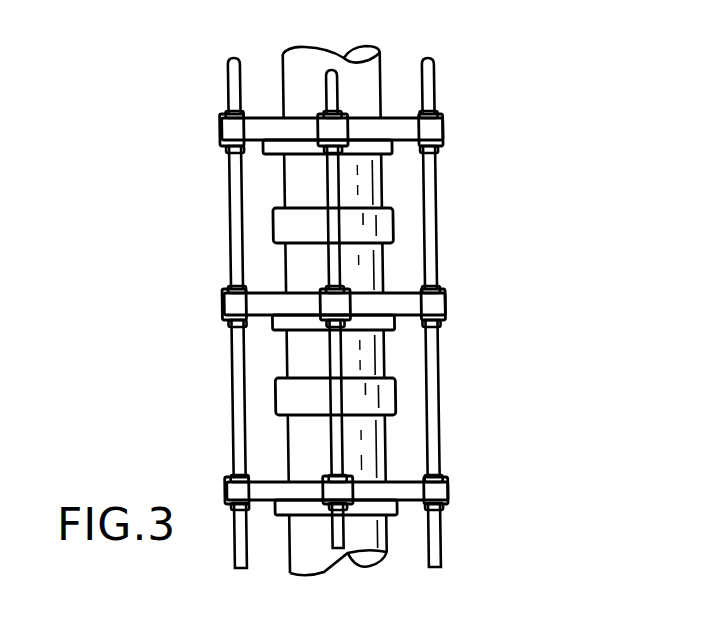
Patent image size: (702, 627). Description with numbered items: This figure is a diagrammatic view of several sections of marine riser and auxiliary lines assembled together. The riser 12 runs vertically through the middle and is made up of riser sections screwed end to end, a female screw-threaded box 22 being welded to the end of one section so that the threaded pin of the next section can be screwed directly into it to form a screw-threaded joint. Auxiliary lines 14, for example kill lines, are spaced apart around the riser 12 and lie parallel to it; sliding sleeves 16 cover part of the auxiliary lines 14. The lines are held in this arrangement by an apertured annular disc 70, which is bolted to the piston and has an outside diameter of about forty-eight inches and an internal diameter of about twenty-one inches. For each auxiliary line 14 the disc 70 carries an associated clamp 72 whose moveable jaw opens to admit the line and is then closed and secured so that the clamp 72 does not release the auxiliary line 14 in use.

The riser 12 is at (382, 84).
The auxiliary lines 14 is at (233, 394).
The sliding sleeves 16 is at (443, 467).
The box 22 is at (395, 225).
The apertured annular disc 70 is at (262, 295).
The clamp 72 is at (450, 488).